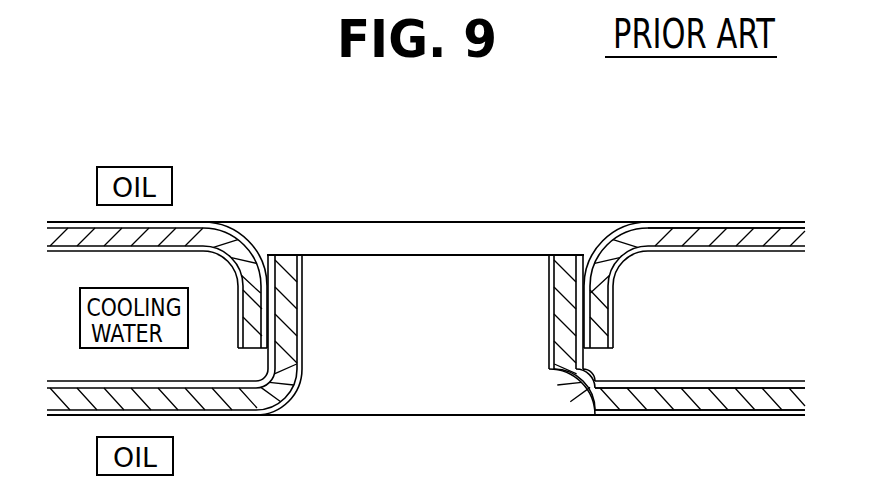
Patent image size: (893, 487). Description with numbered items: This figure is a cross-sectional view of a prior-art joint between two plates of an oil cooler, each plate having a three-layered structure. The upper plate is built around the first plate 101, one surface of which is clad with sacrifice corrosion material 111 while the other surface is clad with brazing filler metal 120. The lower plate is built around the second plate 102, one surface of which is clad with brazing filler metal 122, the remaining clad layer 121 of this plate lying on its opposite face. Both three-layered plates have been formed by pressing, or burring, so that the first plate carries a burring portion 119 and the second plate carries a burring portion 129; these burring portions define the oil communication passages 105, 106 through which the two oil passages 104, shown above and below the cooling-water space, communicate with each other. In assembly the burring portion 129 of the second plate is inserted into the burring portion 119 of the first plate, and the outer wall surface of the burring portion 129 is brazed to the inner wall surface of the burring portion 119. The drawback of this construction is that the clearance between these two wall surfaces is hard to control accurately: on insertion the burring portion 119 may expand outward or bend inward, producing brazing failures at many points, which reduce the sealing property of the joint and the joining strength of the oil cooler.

The first plate 101 is at (751, 240).
The second plate 102 is at (747, 393).
The oil passages 104 is at (197, 206).
The oil communication passage 105 is at (400, 240).
The oil communication passage 106 is at (399, 385).
The sacrifice corrosion material 111 is at (679, 253).
The burring portion 119 is at (597, 342).
The brazing filler metal 120 is at (668, 225).
The upper layer of second wall 121 is at (687, 381).
The brazing filler metal 122 is at (653, 411).
The burring portion 129 is at (567, 265).